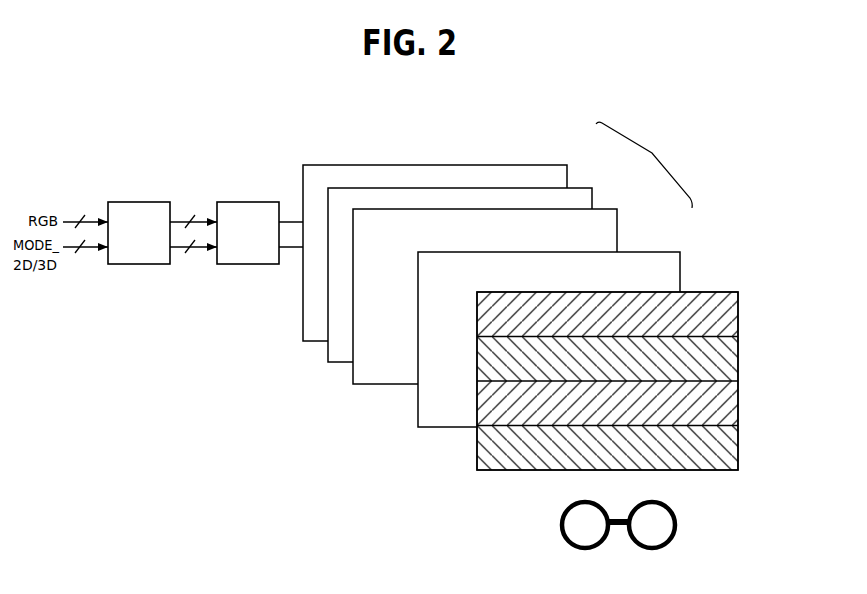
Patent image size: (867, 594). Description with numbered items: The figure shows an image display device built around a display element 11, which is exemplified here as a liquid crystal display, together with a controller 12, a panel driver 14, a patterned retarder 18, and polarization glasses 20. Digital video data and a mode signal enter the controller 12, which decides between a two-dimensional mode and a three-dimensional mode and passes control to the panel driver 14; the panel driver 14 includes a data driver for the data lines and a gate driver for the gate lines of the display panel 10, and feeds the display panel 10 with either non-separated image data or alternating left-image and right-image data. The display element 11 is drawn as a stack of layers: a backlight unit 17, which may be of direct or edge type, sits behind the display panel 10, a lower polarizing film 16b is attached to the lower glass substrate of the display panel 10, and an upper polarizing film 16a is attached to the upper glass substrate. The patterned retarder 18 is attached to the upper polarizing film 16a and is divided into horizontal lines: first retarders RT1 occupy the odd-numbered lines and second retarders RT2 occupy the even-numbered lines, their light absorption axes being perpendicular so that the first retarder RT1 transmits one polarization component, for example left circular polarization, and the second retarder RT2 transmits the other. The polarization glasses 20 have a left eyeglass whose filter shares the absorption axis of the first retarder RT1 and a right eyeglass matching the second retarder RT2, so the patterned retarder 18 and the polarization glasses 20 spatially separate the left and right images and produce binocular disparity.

The display panel 10 is at (610, 209).
The display element 11 is at (644, 165).
The controller 12 is at (148, 241).
The panel driver 14 is at (257, 241).
The upper polarizing film 16a is at (653, 252).
The lower polarizing film 16b is at (580, 188).
The backlight unit 17 is at (560, 165).
The patterned retarder 18 is at (713, 291).
The polarization glasses 20 is at (676, 505).
The first retarder RT1 is at (738, 312).
The second retarder RT2 is at (738, 358).